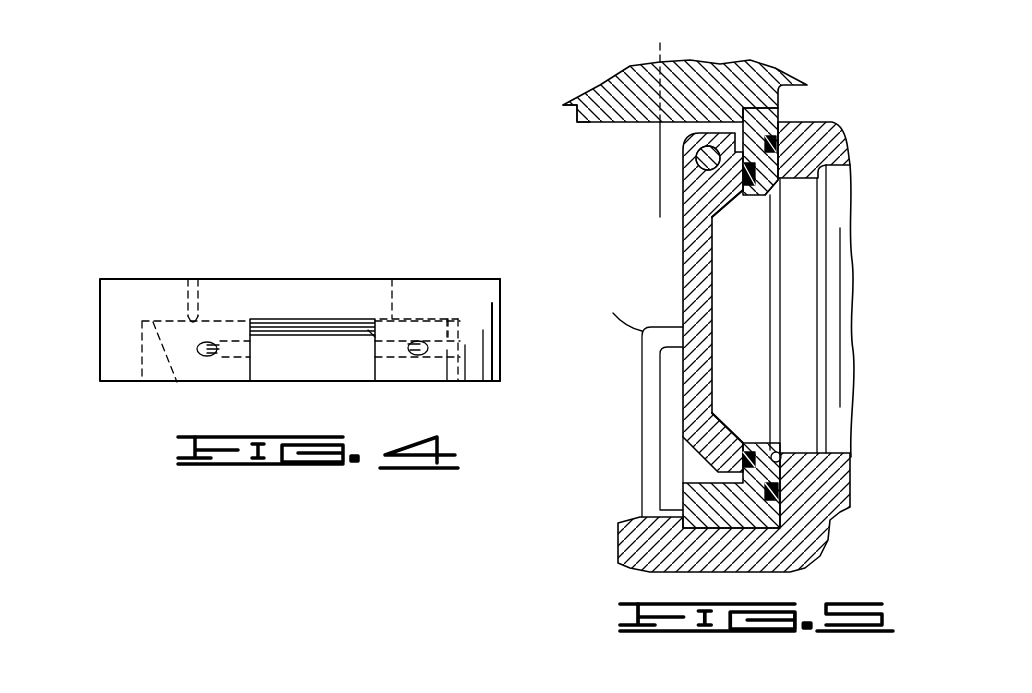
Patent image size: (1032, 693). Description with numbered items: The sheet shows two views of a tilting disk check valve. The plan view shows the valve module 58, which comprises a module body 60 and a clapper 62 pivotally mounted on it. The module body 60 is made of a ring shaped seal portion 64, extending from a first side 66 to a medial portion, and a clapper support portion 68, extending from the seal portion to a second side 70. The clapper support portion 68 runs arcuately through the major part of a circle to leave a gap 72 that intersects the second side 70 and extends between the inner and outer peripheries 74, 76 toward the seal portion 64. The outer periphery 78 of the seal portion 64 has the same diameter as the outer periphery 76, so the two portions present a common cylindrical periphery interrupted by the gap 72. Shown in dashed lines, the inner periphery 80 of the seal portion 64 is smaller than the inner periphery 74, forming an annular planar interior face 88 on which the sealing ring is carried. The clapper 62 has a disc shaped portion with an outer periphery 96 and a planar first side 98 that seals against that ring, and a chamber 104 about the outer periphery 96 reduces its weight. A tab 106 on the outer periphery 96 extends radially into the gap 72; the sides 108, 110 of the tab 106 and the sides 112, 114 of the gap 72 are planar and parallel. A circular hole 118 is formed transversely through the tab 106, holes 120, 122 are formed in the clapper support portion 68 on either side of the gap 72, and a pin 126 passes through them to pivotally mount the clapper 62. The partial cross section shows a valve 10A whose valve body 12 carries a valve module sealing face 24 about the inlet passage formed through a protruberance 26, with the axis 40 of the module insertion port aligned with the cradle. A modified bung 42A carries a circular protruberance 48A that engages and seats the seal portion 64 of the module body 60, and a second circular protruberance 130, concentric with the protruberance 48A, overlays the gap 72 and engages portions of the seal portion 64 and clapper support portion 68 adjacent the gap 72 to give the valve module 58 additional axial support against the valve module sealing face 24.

In FIG. 5, the valve 10A is at (824, 68).
In FIG. 5, the valve body 12 is at (805, 543).
In FIG. 5, the valve module sealing face 24 is at (778, 453).
In FIG. 5, the protruberance 26 is at (828, 130).
In FIG. 5, the axis 40 is at (660, 183).
In FIG. 5, the bung 42A is at (702, 66).
In FIG. 5, the circular protruberance 48A is at (780, 100).
In FIG. 4, the valve module 58 is at (434, 253).
In FIG. 5, the valve module 58 is at (676, 262).
In FIG. 4, the module body 60 is at (135, 286).
In FIG. 5, the module body 60 is at (684, 510).
In FIG. 4, the clapper 62 is at (394, 358).
In FIG. 5, the clapper 62 is at (690, 293).
In FIG. 4, the seal portion 64 is at (480, 292).
In FIG. 5, the seal portion 64 is at (770, 192).
In FIG. 4, the first side 66 is at (324, 318).
In FIG. 4, the clapper support portion 68 is at (492, 375).
In FIG. 5, the clapper support portion 68 is at (697, 500).
In FIG. 4, the second side 70 is at (492, 383).
In FIG. 4, the gap 72 is at (256, 370).
In FIG. 5, the gap 72 is at (692, 131).
In FIG. 4, the inner periphery 74 is at (486, 385).
In FIG. 4, the outer periphery 76 is at (500, 352).
In FIG. 4, the outer periphery 78 is at (500, 294).
In FIG. 4, the inner periphery 80 is at (392, 318).
In FIG. 4, the interior face 88 is at (198, 262).
In FIG. 4, the outer periphery 96 is at (440, 345).
In FIG. 4, the first side 98 is at (438, 318).
In FIG. 4, the chamber 104 is at (165, 360).
In FIG. 4, the tab 106 is at (335, 372).
In FIG. 4, the side 108 is at (247, 363).
In FIG. 4, the side 110 is at (407, 364).
In FIG. 4, the side 112 is at (262, 318).
In FIG. 4, the side 114 is at (370, 335).
In FIG. 4, the circular hole 118 is at (305, 350).
In FIG. 4, the hole 120 is at (205, 357).
In FIG. 4, the hole 122 is at (422, 353).
In FIG. 4, the pin 126 is at (316, 318).
In FIG. 5, the second circular protruberance 130 is at (580, 120).